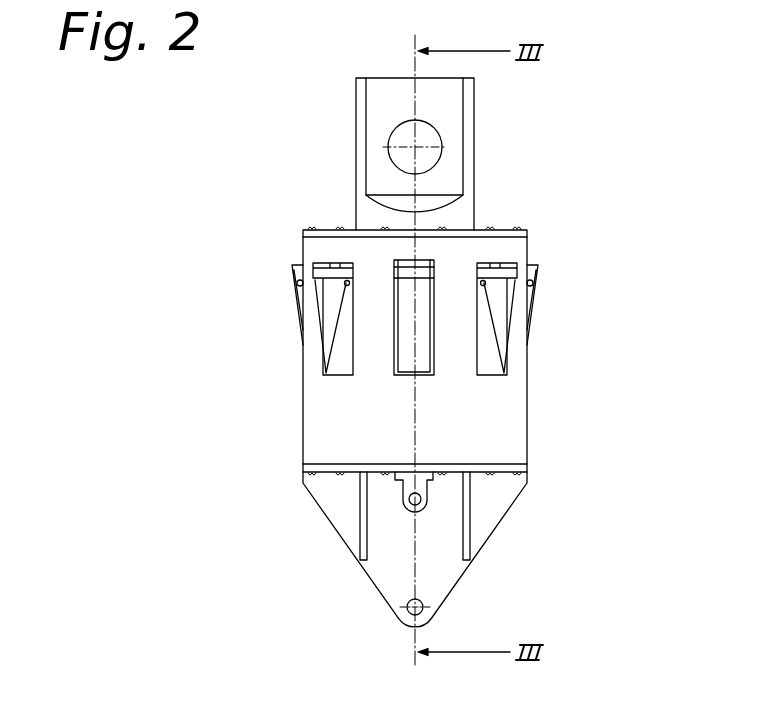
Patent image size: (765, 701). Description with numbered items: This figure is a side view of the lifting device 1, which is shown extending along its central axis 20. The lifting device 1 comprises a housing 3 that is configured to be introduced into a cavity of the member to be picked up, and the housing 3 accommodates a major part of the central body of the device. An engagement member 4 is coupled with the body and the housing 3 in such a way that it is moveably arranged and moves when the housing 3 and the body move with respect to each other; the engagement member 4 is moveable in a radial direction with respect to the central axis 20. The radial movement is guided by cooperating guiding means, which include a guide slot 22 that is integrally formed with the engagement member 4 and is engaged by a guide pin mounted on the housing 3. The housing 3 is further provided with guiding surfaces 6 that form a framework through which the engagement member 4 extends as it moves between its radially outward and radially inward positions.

The lifting device 1 is at (555, 108).
The housing 3 is at (510, 443).
The engagement member 4 is at (296, 273).
The guiding surfaces 6 is at (328, 368).
The central axis 20 is at (415, 560).
The guide slot 22 is at (345, 281).